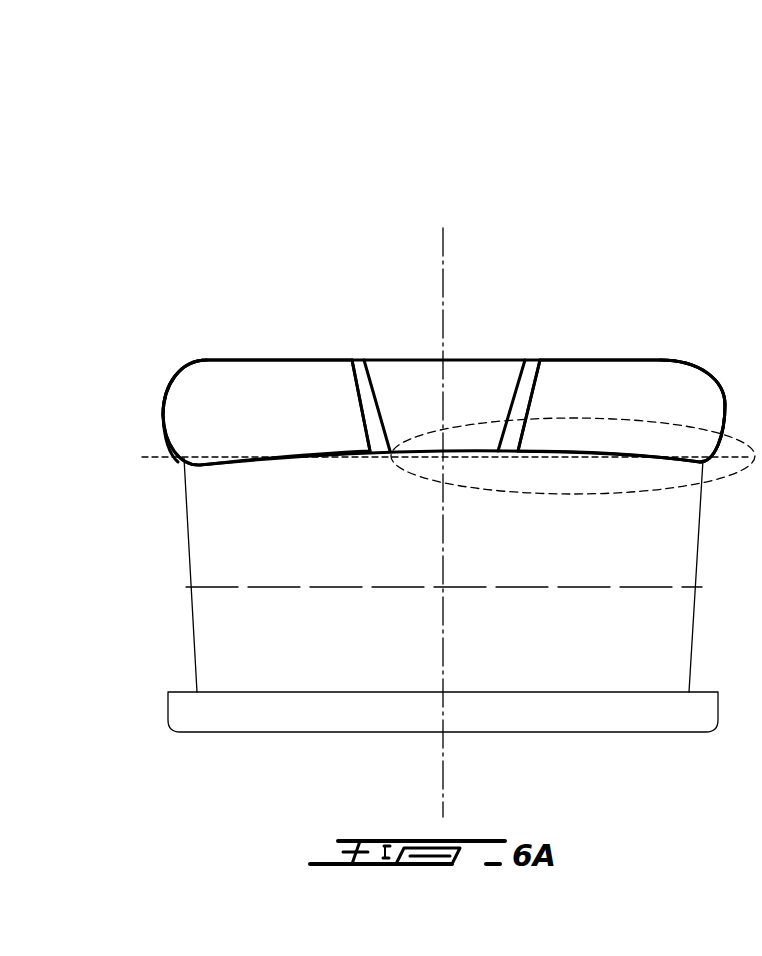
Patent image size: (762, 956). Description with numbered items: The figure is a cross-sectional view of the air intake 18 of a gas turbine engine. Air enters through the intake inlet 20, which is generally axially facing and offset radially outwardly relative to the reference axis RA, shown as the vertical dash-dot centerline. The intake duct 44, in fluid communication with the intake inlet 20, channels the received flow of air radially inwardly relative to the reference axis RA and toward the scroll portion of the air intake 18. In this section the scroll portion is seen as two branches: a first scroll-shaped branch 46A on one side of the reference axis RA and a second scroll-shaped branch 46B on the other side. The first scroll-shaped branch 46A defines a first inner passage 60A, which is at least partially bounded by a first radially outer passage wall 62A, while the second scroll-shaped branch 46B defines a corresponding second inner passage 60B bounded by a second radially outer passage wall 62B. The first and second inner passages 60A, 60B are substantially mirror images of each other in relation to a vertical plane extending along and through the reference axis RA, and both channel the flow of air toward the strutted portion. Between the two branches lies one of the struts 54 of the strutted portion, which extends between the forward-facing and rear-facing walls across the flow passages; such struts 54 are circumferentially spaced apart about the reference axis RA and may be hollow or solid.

The air intake 18 is at (236, 238).
The intake inlet 20 is at (327, 732).
The intake duct 44 is at (237, 630).
The first scroll-shaped branch 46A is at (172, 373).
The second scroll-shaped branch 46B is at (713, 378).
The strut 54 is at (362, 390).
The first inner passage 60A is at (287, 428).
The second inner passage 60B is at (637, 412).
The first radially outer passage wall 62A is at (178, 396).
The second radially outer passage wall 62B is at (713, 395).
The reference axis RA is at (440, 231).